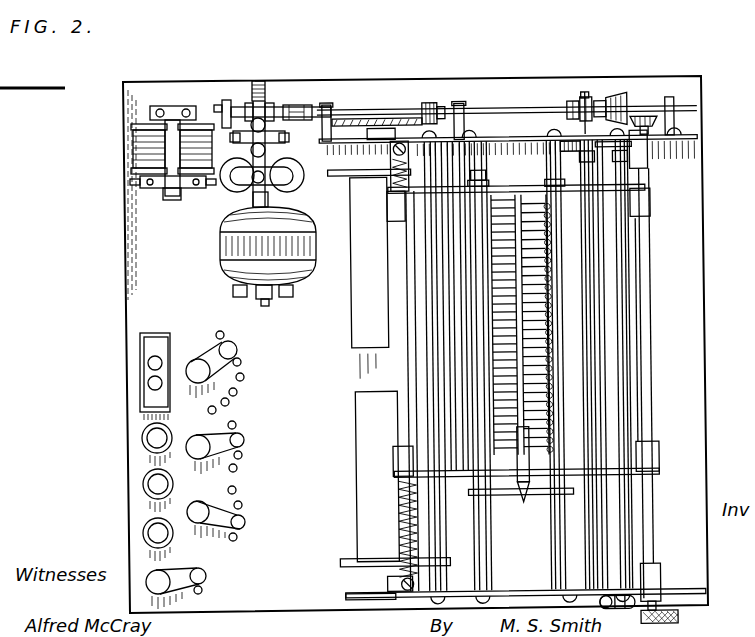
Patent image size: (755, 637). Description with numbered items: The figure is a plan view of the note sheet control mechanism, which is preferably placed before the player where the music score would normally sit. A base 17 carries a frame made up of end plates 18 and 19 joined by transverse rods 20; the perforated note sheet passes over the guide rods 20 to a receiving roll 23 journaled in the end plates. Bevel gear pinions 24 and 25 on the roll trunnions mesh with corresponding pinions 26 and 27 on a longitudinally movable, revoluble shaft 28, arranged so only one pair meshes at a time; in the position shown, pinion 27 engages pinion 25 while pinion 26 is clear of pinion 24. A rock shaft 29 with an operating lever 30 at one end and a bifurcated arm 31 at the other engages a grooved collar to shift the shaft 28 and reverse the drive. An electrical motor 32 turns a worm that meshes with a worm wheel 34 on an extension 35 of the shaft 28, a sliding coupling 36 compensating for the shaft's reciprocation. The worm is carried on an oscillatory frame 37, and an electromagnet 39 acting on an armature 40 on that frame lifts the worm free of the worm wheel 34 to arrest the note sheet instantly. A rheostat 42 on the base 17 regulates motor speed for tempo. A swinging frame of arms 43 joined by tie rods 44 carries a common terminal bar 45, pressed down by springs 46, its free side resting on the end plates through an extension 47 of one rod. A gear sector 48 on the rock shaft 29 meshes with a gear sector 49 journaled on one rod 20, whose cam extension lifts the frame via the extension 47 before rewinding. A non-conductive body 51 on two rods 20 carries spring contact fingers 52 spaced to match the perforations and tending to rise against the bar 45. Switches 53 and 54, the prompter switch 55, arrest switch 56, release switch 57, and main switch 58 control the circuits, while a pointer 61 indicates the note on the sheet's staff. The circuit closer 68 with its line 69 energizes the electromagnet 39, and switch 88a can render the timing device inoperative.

The base 17 is at (415, 344).
The end plate 18 is at (515, 590).
The end plate 19 is at (508, 138).
The transverse rods 20 is at (440, 541).
The receiving roll 23 is at (346, 558).
The bevel gear pinion 24 is at (650, 116).
The bevel gear pinion 25 is at (348, 117).
The gear pinion 26 is at (625, 92).
The gear pinion 27 is at (436, 102).
The longitudinally movable revoluble shaft 28 is at (497, 110).
The rock shaft 29 is at (598, 342).
The operating lever 30 is at (612, 597).
The bifurcated arm 31 is at (590, 92).
The electrical motor 32 is at (245, 256).
The worm wheel 34 is at (258, 104).
The extension of the shaft 35 is at (275, 108).
The sliding coupling 36 is at (305, 106).
The oscillatory frame 37 is at (246, 108).
The electromagnet 39 is at (300, 192).
The armature 40 is at (300, 179).
The rheostat 42 is at (242, 370).
The arms 43 is at (665, 468).
The tie rods 44 is at (590, 283).
The common terminal bar 45 is at (483, 215).
The springs 46 is at (392, 168).
The extension of the rod 47 is at (655, 150).
The gear sector 48 is at (590, 115).
The gear sector 49 is at (608, 163).
The body of non-conductive material 51 is at (520, 230).
The spring contact fingers 52 is at (548, 300).
The switch 53 is at (245, 443).
The switch 54 is at (246, 518).
The prompter switch 55 is at (140, 436).
The arrest switch 56 is at (141, 492).
The temporary switch 57 is at (142, 537).
The main switch 58 is at (142, 370).
The pointer 61 is at (518, 497).
The electro-magnetic switch or circuit closer 68 is at (135, 150).
The line 69 is at (132, 186).
The switch 88a is at (207, 580).